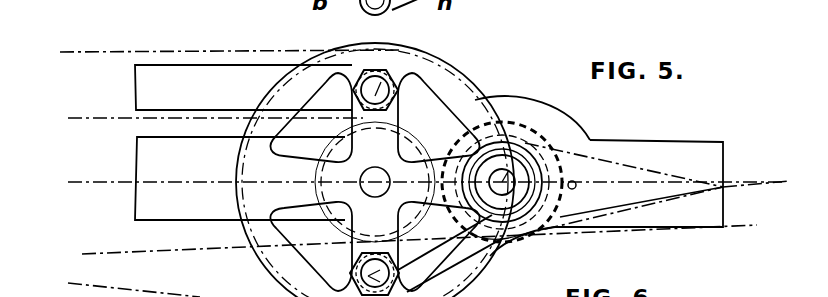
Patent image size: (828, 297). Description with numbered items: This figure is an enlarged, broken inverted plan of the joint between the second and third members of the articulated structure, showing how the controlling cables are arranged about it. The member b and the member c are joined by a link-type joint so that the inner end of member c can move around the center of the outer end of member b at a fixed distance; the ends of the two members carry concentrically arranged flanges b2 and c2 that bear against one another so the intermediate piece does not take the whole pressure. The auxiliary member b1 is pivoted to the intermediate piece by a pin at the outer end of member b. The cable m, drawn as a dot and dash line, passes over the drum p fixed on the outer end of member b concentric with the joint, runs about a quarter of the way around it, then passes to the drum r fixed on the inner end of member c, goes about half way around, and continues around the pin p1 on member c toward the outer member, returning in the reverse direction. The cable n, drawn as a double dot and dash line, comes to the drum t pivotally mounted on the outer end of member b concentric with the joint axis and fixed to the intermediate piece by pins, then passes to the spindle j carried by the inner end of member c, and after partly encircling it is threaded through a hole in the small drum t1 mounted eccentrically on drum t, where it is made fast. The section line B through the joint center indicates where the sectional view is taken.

The member b is at (324, 170).
The auxiliary member b1 is at (243, 87).
The section line B— B is at (412, 178).
The cable n is at (163, 51).
The cable m is at (120, 121).
The drum p is at (346, 278).
The drum t is at (468, 270).
The flange c2 is at (453, 147).
The spindle j is at (546, 137).
The member c is at (699, 158).
The drum r is at (541, 148).
The pivot p1 is at (575, 190).
The small drum t1 is at (528, 226).
The flange b2 is at (412, 125).